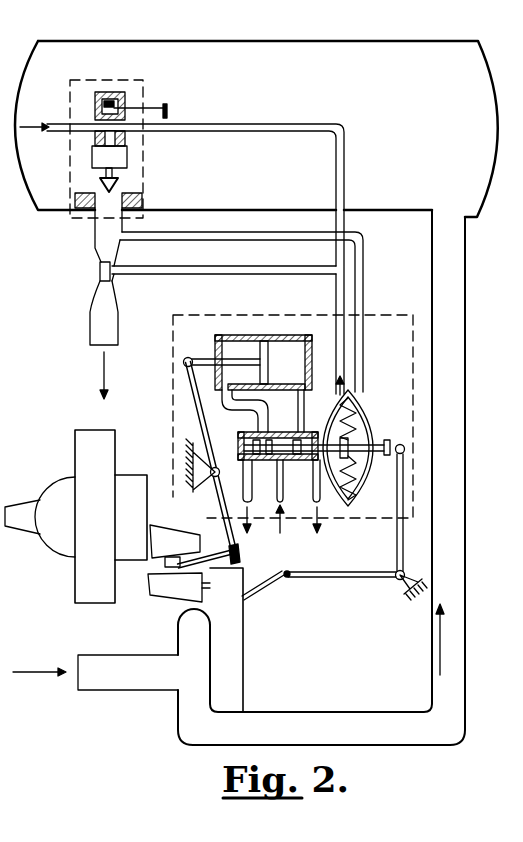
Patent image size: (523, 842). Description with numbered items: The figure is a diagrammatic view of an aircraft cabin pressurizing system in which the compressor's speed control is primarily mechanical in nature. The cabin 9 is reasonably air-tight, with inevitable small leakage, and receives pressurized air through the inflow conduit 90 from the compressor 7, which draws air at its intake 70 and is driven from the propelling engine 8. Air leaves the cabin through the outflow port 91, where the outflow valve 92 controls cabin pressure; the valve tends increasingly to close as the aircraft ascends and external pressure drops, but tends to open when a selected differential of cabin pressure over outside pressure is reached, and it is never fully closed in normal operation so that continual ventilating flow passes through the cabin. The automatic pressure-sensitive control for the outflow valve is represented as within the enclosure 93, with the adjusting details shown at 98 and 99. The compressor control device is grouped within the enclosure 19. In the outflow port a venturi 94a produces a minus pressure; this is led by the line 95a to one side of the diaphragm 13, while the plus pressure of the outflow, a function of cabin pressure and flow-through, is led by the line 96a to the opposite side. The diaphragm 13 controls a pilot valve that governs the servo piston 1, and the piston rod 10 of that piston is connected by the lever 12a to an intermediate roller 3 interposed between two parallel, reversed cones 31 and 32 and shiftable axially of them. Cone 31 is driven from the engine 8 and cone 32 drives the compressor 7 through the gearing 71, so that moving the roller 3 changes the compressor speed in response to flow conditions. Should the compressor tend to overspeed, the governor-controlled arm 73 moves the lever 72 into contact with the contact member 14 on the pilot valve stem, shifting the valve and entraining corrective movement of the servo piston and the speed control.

The servo piston 1 is at (278, 338).
The intermediate roller 3 is at (165, 580).
The compressor 7 is at (183, 698).
The propelling engine 8 is at (85, 535).
The cabin 9 is at (414, 46).
The piston rod 10 is at (184, 358).
The lever 12a is at (197, 422).
The diaphragm 13 is at (357, 490).
The contact member 14 is at (390, 446).
The enclosure 19 is at (380, 292).
The reversed cone 31 is at (185, 502).
The reversed cone 32 is at (178, 592).
The compressor intake 70 is at (92, 688).
The gearing 71 is at (225, 660).
The lever 72 is at (336, 578).
The governor-controlled arm 73 is at (266, 556).
The inflow conduit 90 is at (463, 446).
The outflow port 91 is at (100, 326).
The outflow valve 92 is at (96, 178).
The enclosure 93 is at (126, 80).
The venturi 94a is at (102, 270).
The minus pressure line 95a is at (200, 274).
The plus pressure line 96a is at (196, 236).
The handle 98 is at (122, 104).
The valve block 99 is at (124, 136).